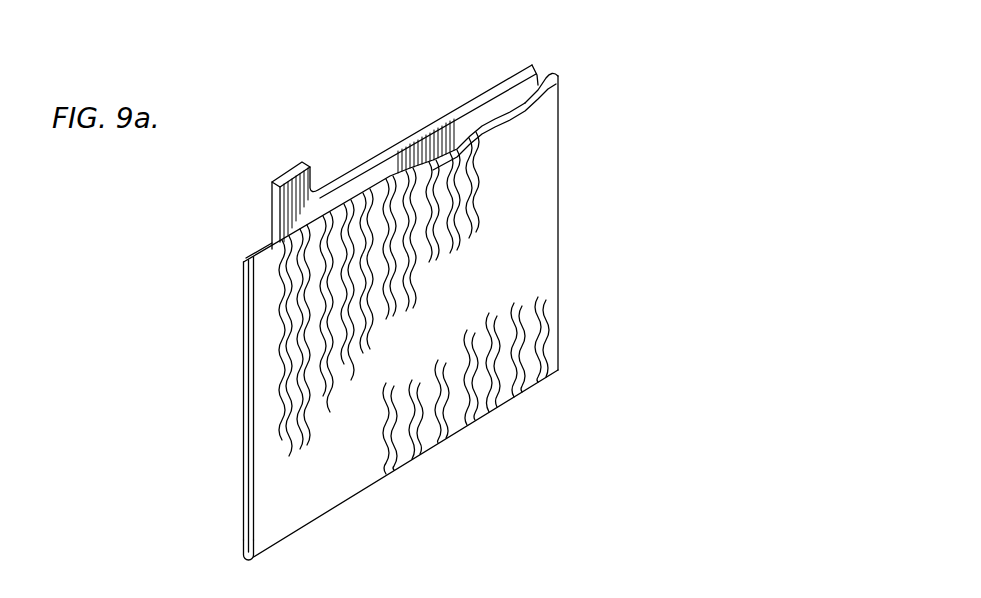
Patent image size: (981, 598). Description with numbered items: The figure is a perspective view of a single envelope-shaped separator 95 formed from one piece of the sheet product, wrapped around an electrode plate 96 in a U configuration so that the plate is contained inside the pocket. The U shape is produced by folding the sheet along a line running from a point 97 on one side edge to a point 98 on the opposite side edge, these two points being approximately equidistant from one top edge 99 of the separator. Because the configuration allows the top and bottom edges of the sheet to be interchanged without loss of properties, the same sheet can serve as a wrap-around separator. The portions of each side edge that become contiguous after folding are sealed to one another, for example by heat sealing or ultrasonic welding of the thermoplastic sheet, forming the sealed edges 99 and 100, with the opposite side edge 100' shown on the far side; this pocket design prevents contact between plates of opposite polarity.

The separator 95 is at (566, 274).
The electrode plate 96 is at (377, 154).
The fold point on one side edge 97 is at (567, 365).
The fold point on opposite side edge 98 is at (233, 557).
The top edge 99 is at (546, 70).
The sealed edge 100 is at (212, 404).
The right side edge 100' is at (599, 223).